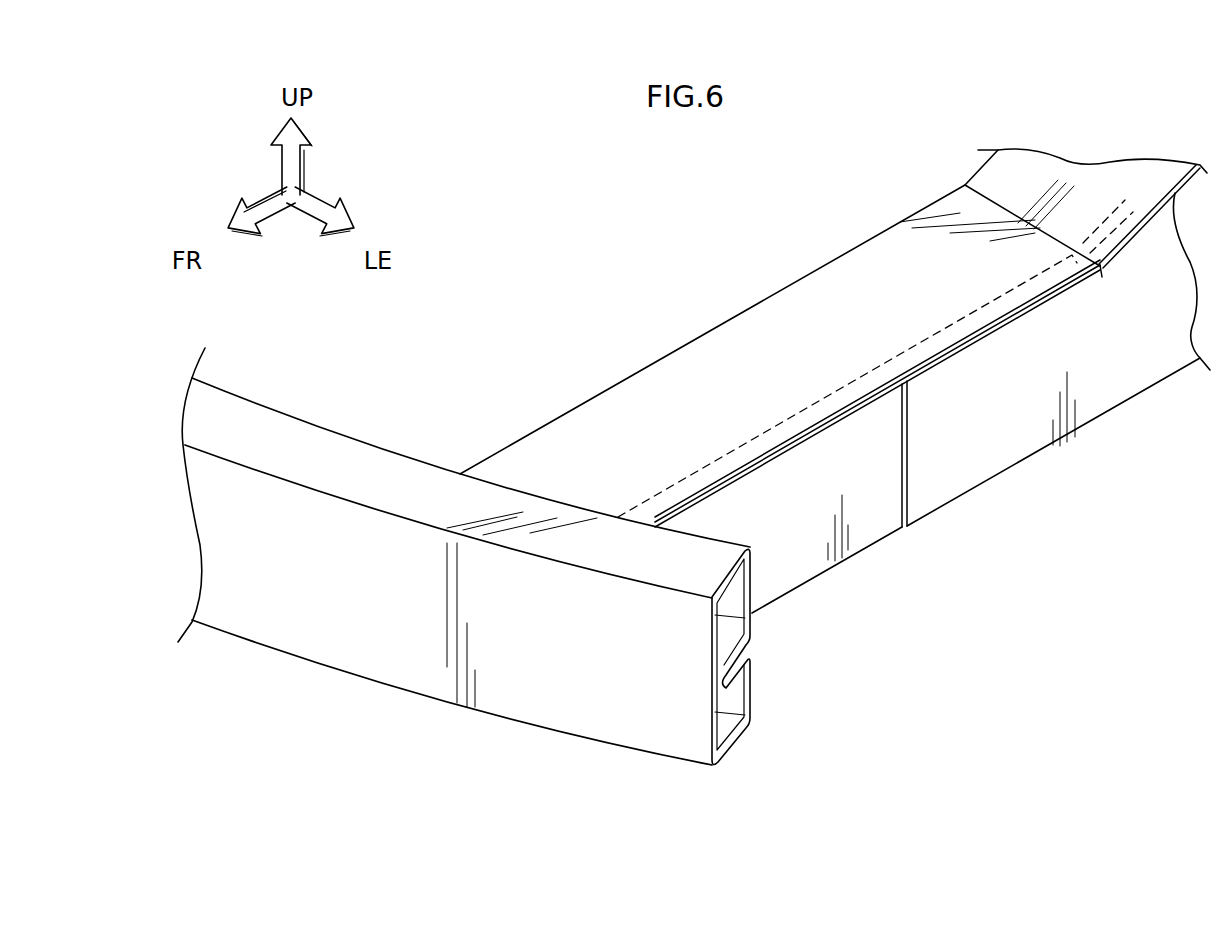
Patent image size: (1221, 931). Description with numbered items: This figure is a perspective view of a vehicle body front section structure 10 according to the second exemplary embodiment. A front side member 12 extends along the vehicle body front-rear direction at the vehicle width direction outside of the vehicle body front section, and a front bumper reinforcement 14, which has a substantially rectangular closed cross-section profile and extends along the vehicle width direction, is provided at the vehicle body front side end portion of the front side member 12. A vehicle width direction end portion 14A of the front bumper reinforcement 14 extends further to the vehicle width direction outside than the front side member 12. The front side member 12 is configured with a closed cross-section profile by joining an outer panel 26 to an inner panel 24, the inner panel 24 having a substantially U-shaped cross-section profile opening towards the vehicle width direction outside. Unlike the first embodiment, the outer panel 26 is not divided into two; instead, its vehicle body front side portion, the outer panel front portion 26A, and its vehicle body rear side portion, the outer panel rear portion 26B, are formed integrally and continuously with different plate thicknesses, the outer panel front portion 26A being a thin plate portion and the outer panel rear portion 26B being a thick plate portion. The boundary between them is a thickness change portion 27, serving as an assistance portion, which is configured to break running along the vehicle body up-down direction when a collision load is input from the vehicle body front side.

The vehicle body structure 10 is at (978, 597).
The front side member 12 is at (657, 358).
The front bumper reinforcement 14 is at (395, 691).
The vehicle width direction end portion 14A is at (718, 767).
The inner panel 24 is at (850, 284).
The outer panel 26 is at (972, 496).
The outer panel front portion 26A is at (792, 570).
The outer panel rear portion 26B is at (1093, 403).
The thickness change portion 27 is at (905, 532).